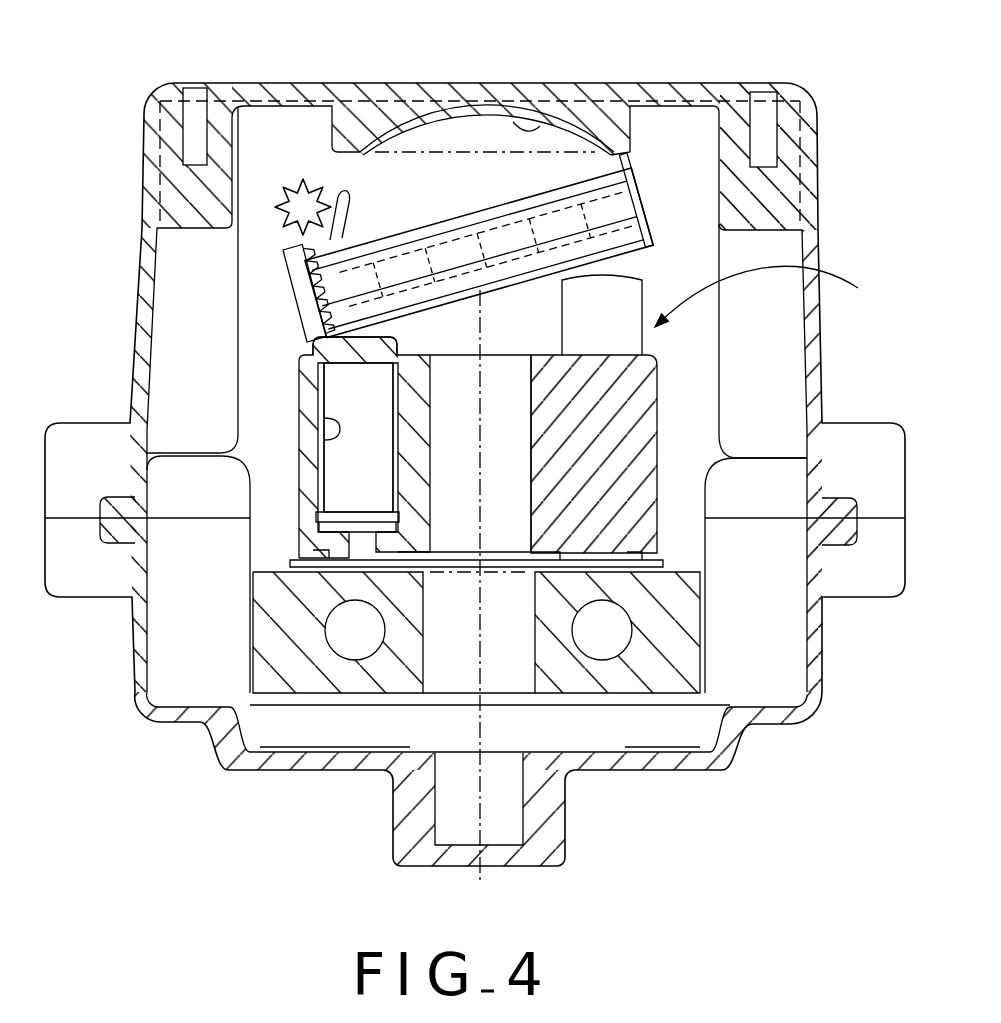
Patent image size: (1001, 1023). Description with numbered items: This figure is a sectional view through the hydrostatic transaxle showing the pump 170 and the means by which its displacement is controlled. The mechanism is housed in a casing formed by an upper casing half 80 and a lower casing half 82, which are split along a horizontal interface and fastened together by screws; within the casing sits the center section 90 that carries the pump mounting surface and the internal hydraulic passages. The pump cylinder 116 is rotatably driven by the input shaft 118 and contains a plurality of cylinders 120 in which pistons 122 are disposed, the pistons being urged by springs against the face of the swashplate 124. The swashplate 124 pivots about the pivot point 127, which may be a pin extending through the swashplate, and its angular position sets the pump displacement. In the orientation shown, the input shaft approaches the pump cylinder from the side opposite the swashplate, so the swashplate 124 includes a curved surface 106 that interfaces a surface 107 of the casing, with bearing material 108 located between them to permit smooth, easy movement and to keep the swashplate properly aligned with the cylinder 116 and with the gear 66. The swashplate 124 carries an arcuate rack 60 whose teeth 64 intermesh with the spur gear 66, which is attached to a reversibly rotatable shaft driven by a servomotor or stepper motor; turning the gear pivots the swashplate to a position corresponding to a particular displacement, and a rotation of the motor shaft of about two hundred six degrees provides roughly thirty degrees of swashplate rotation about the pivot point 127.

The arcuate rack 60 is at (287, 250).
The teeth 64 is at (307, 283).
The spur gear 66 is at (293, 180).
The upper casing half 80 is at (815, 341).
The lower casing half 82 is at (820, 680).
The center section 90 is at (683, 637).
The curved surface 106 is at (445, 120).
The casing surface 107 is at (540, 125).
The bearing material 108 is at (485, 112).
The pump cylinder 116 is at (306, 382).
The input shaft 118 is at (506, 430).
The cylinders 120 is at (327, 418).
The pistons 122 is at (627, 272).
The swashplate 124 is at (637, 193).
The pivot point 127 is at (481, 297).
The pump 170 is at (776, 296).